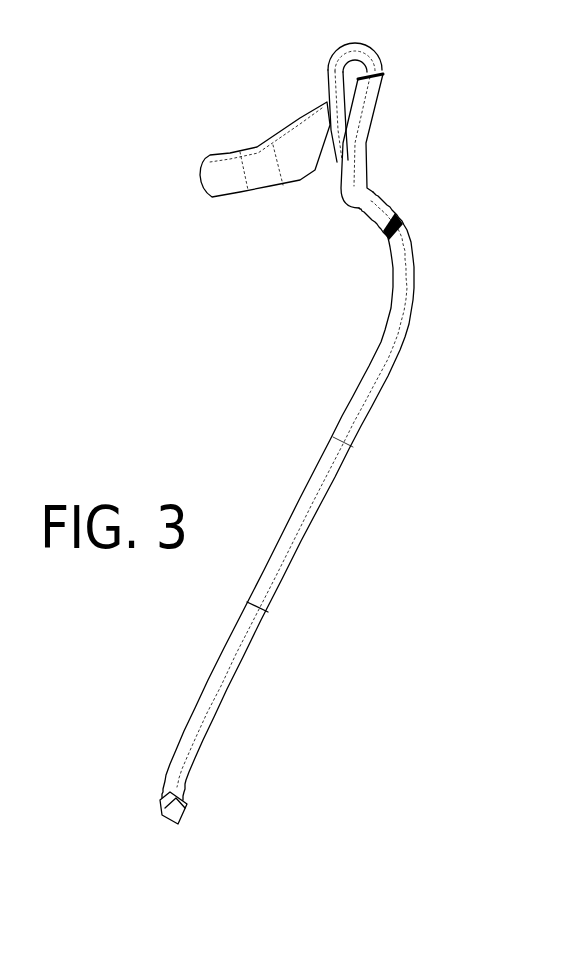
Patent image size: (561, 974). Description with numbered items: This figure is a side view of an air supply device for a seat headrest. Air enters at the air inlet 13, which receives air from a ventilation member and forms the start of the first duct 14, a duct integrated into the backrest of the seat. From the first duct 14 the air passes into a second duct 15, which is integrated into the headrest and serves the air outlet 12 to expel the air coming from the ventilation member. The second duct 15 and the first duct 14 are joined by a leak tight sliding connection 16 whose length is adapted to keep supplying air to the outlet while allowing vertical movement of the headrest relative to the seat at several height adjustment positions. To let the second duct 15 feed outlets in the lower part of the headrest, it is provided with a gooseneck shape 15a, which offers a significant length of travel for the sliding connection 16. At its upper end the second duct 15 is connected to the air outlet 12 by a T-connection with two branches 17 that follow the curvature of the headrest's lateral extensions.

The air outlet 12 is at (212, 197).
The air inlet 13 is at (156, 829).
The first duct 14 is at (241, 664).
The second duct 15 is at (375, 120).
The gooseneck shape 15a is at (378, 53).
The leak tight sliding connection 16 is at (397, 118).
The T-connection branches 17 is at (332, 130).